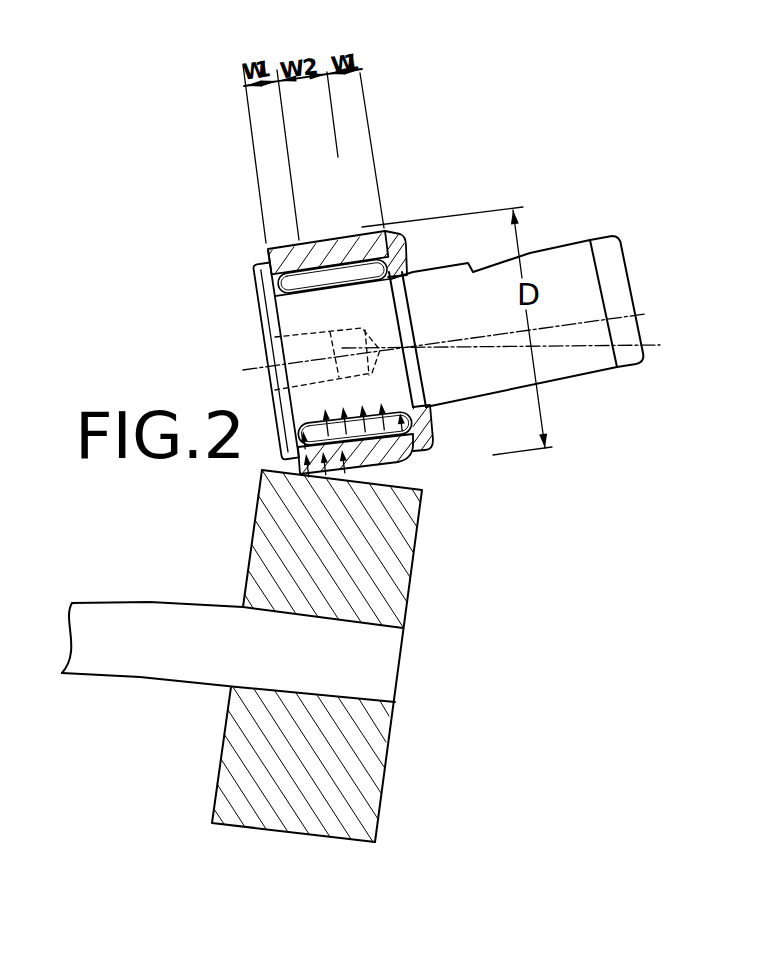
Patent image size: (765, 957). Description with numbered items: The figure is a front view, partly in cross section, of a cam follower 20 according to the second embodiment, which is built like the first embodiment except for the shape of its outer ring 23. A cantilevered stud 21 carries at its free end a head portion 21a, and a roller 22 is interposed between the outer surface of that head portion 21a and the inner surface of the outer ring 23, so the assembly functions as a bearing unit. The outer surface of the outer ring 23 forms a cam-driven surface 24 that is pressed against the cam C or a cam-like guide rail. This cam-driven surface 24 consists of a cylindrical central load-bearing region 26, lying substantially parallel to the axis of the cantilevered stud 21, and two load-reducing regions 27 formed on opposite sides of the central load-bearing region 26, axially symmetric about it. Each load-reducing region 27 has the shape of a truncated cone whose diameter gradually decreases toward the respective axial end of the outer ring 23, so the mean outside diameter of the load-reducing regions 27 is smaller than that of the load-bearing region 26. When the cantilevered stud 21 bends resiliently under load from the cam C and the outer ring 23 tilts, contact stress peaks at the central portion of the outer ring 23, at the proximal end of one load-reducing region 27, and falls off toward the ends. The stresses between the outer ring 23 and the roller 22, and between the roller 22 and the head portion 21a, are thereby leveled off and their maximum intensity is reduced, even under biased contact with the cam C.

The cam follower 20 is at (412, 231).
The cantilevered stud 21 is at (565, 255).
The head portion of the stud 21a is at (313, 307).
The roller 22 is at (290, 273).
The outer ring 23 is at (350, 232).
The cam-driven surface 24 is at (298, 282).
The central load-bearing region 26 is at (380, 481).
The load-reducing regions 27 is at (406, 465).
The cam C is at (397, 572).